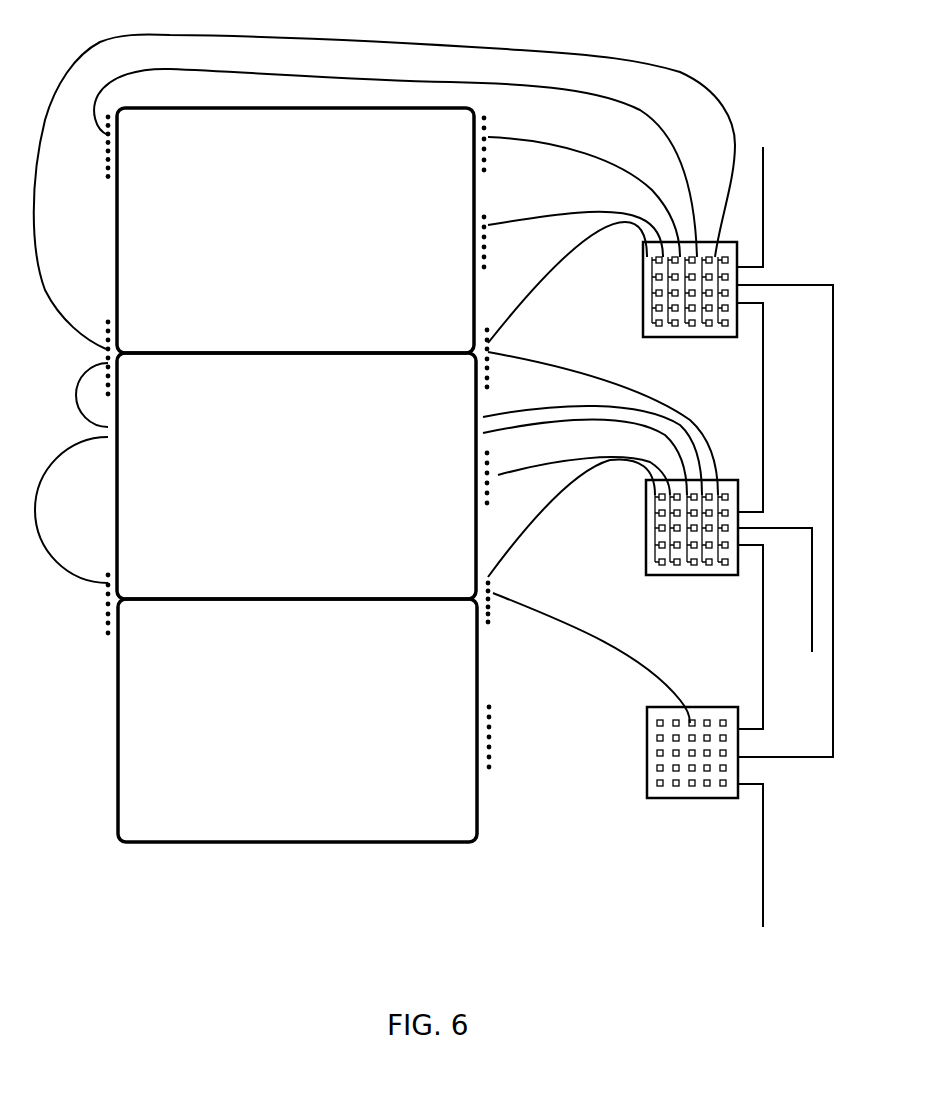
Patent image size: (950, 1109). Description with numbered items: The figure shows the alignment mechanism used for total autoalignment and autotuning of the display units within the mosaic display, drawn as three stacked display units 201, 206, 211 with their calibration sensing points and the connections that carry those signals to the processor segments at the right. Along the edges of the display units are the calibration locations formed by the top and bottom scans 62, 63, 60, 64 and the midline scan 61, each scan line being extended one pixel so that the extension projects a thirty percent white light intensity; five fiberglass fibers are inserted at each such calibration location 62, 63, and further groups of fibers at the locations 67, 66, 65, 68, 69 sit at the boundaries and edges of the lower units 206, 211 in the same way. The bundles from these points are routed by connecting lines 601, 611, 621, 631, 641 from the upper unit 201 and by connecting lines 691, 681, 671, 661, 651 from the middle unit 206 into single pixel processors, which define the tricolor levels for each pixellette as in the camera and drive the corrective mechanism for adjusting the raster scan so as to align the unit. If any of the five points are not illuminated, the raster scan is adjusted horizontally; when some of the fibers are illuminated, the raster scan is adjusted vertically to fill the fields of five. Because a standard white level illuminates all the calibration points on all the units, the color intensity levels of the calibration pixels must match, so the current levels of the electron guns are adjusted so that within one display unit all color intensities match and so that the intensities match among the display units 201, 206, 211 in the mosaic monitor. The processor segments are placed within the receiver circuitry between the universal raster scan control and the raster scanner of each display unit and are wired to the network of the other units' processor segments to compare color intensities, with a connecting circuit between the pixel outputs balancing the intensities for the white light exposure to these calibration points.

The display unit 201 is at (138, 260).
The display unit 206 is at (142, 525).
The display unit 211 is at (138, 755).
The top and bottom scan extension 63 is at (109, 179).
The top and bottom scan extension 64 is at (108, 320).
The row electrode terminals 68 is at (109, 393).
The row electrode terminals 69 is at (107, 617).
The top and bottom scan extension 62 is at (485, 127).
The midline scan extension 61 is at (485, 217).
The top and bottom scan extension 60 is at (492, 340).
The electrode terminals 67 is at (490, 383).
The electrode terminals 66 is at (489, 460).
The electrode terminals 65 is at (496, 625).
The connecting wire 601 is at (626, 225).
The connecting wire 611 is at (580, 208).
The connecting wire 621 is at (592, 154).
The connecting wire 631 is at (656, 118).
The connecting wire 641 is at (722, 100).
The connecting wire 691 is at (669, 398).
The connecting wire 681 is at (588, 407).
The connecting wire 671 is at (593, 418).
The connecting wire 661 is at (560, 462).
The connecting wire 651 is at (583, 480).